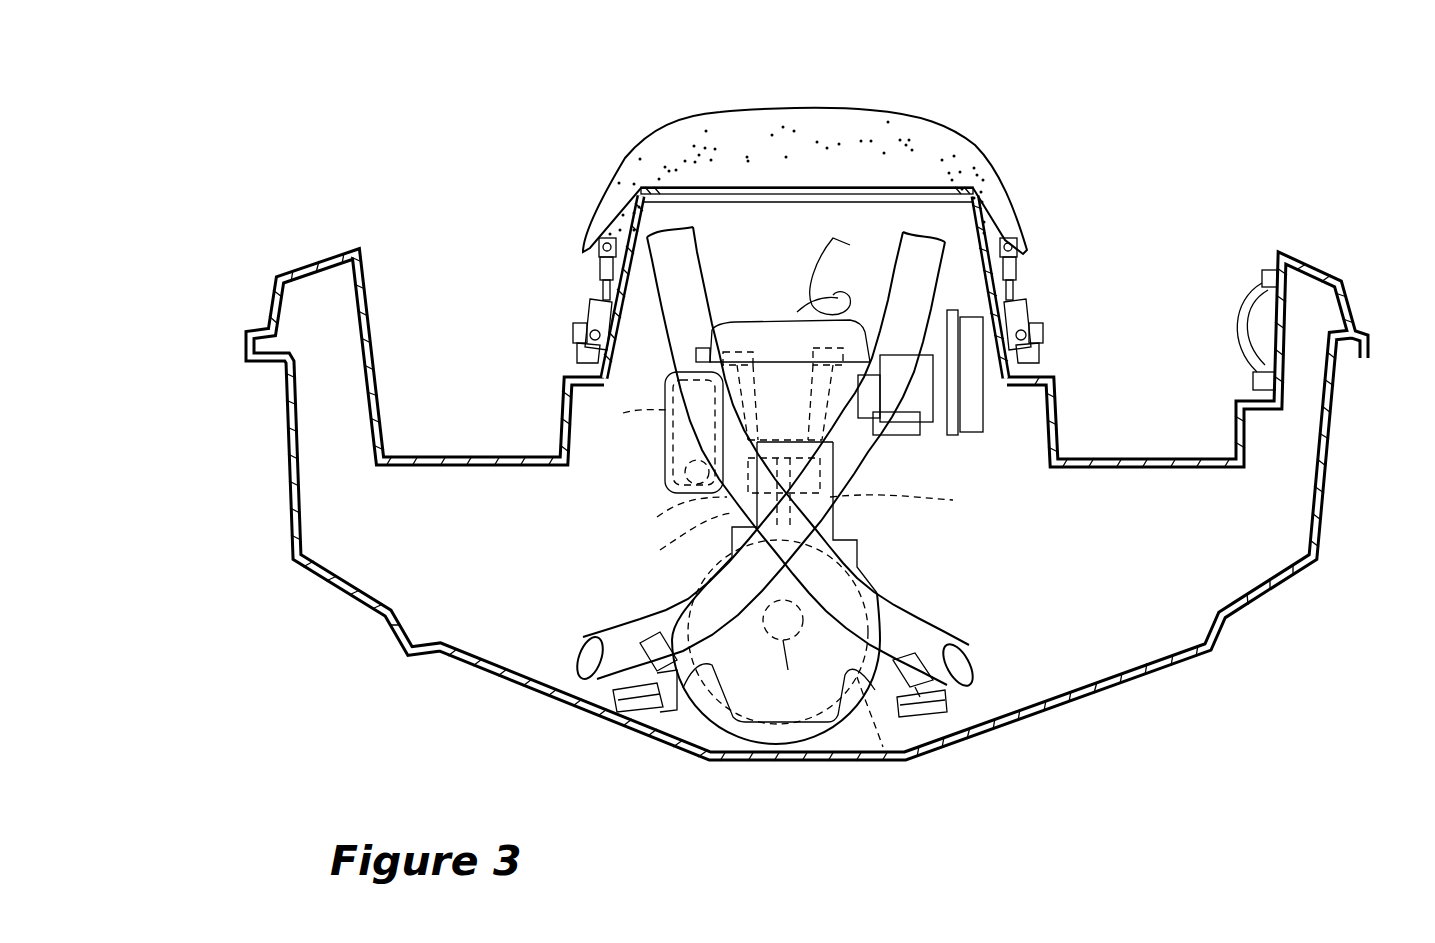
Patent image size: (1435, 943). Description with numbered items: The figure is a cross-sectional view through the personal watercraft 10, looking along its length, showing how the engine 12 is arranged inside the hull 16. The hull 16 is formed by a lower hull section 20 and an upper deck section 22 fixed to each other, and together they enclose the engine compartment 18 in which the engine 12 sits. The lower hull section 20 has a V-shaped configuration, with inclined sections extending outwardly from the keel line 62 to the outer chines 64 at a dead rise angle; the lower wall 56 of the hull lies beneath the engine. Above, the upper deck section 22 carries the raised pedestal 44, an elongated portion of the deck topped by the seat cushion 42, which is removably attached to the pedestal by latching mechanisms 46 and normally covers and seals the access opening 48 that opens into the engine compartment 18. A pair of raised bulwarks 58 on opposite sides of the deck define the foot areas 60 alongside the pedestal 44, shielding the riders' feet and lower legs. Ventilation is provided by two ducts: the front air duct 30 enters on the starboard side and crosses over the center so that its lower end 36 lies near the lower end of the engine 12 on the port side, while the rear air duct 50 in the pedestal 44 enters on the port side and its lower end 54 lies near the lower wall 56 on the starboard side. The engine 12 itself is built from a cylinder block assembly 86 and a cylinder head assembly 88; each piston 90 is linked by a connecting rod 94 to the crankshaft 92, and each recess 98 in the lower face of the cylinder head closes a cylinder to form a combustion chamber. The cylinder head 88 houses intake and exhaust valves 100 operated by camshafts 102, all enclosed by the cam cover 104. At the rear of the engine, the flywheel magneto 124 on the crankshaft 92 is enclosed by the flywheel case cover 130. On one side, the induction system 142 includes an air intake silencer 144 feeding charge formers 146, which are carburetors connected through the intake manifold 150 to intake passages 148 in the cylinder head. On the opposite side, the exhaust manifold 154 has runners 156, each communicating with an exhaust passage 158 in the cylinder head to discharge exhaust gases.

The personal watercraft 10 is at (1135, 132).
The engine 12 is at (642, 490).
The hull 16 is at (1368, 318).
The engine compartment 18 is at (1172, 572).
The lower hull section 20 is at (1172, 660).
The upper deck section 22 is at (377, 272).
The air duct 30 is at (592, 628).
The lower end of the air duct 36 is at (565, 660).
The seat cushion 42 is at (950, 120).
The raised pedestal 44 is at (556, 437).
The latching mechanism 46 is at (588, 300).
The access opening 48 is at (718, 198).
The rear air duct 50 is at (980, 637).
The lower end of the rear air duct 54 is at (975, 670).
The lower wall 56 is at (1068, 680).
The raised bulwarks 58 is at (340, 248).
The foot areas 60 is at (472, 453).
The keel line 62 is at (800, 768).
The outer chines 64 is at (292, 560).
The cylinder block assembly 86 is at (835, 508).
The cylinder head assembly 88 is at (860, 432).
The piston 90 is at (720, 500).
The crankshaft 92 is at (783, 643).
The connecting rod 94 is at (730, 540).
The recess 98 is at (920, 498).
The intake and exhaust valves 100 is at (783, 355).
The intake and exhaust camshafts 102 is at (813, 355).
The cam cover 104 is at (790, 322).
The flywheel magneto 124 is at (883, 747).
The flywheel case cover 130 is at (933, 585).
The induction system 142 is at (1010, 483).
The air intake silencer 144 is at (1000, 415).
The charge formers 146 is at (1018, 282).
The intake passage 148 is at (975, 390).
The intake manifold 150 is at (848, 368).
The exhaust manifold 154 is at (592, 375).
The runners 156 is at (700, 408).
The exhaust passage 158 is at (660, 447).